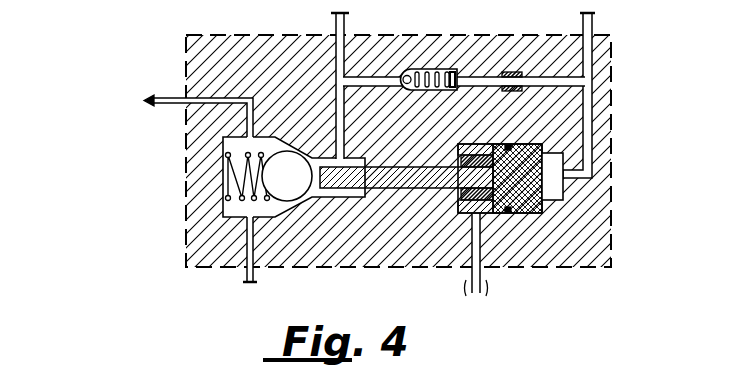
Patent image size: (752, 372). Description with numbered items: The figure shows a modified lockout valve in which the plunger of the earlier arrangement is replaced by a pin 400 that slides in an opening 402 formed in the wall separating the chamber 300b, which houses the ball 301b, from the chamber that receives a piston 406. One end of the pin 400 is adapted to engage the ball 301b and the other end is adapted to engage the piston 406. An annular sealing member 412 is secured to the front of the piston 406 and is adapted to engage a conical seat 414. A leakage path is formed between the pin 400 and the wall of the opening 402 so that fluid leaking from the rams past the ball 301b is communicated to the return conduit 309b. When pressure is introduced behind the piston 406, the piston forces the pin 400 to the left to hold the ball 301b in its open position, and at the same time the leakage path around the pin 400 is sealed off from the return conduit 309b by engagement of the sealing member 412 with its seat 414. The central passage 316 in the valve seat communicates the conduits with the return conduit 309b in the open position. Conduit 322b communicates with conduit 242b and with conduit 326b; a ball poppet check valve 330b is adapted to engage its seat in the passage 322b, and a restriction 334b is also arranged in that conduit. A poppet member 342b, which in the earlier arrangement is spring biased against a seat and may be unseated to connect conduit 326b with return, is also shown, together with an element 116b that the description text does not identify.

The return passage 116b is at (168, 105).
The conduit 242b is at (338, 101).
The chamber 300b is at (223, 217).
The ball 301b is at (292, 186).
The return conduit 309b is at (472, 255).
The central passage 316 is at (592, 112).
The conduit 322b is at (365, 78).
The conduit 326b is at (592, 22).
The ball poppet check valve 330b is at (405, 70).
The restriction 334b is at (528, 51).
The poppet member 342b is at (248, 247).
The pin 400 is at (379, 172).
The opening 402 is at (440, 186).
The piston 406 is at (532, 203).
The annular sealing member 412 is at (509, 143).
The conical seat 414 is at (466, 143).